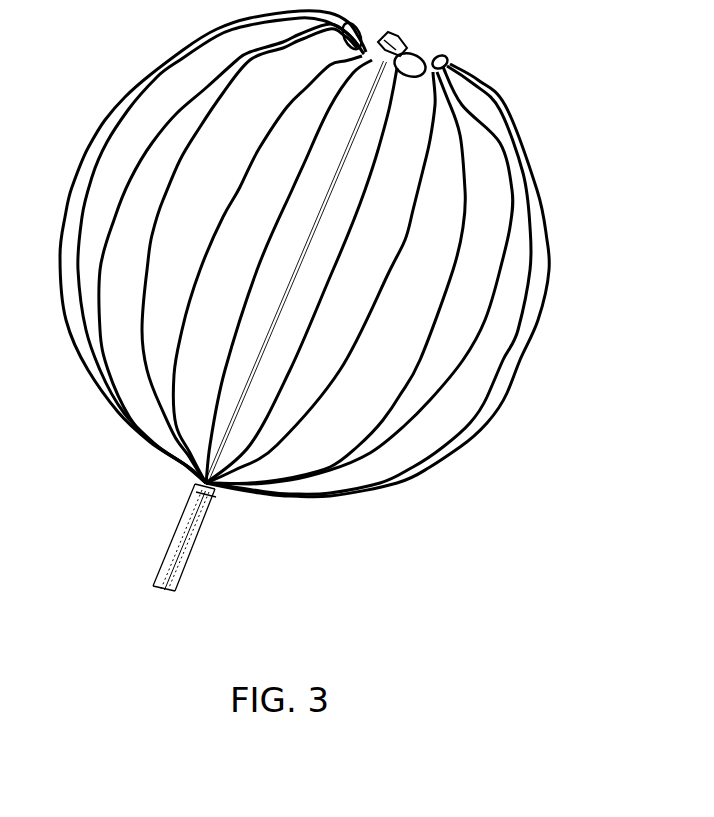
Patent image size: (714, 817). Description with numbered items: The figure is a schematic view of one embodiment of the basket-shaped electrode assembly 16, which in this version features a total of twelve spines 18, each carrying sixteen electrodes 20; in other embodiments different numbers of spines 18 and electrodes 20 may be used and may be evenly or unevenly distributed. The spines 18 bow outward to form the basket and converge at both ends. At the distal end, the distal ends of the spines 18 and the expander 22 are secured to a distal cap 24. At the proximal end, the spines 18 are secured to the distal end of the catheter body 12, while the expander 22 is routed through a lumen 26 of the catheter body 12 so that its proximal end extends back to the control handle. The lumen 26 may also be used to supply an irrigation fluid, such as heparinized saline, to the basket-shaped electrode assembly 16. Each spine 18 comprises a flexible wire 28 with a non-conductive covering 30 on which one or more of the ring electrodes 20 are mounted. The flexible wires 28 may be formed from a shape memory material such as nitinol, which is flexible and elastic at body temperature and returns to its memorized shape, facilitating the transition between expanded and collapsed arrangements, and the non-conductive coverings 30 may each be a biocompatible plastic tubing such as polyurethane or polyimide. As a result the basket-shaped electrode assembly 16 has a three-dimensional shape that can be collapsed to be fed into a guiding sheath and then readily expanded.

The catheter body 12 is at (172, 533).
The basket-shaped electrode assembly 16 is at (75, 63).
The spine 18 is at (538, 177).
The electrode 20 is at (551, 243).
The expander 22 is at (283, 301).
The distal cap 24 is at (406, 46).
The lumen 26 is at (197, 527).
The flexible wire 28 is at (414, 80).
The non-conductive covering 30 is at (445, 62).